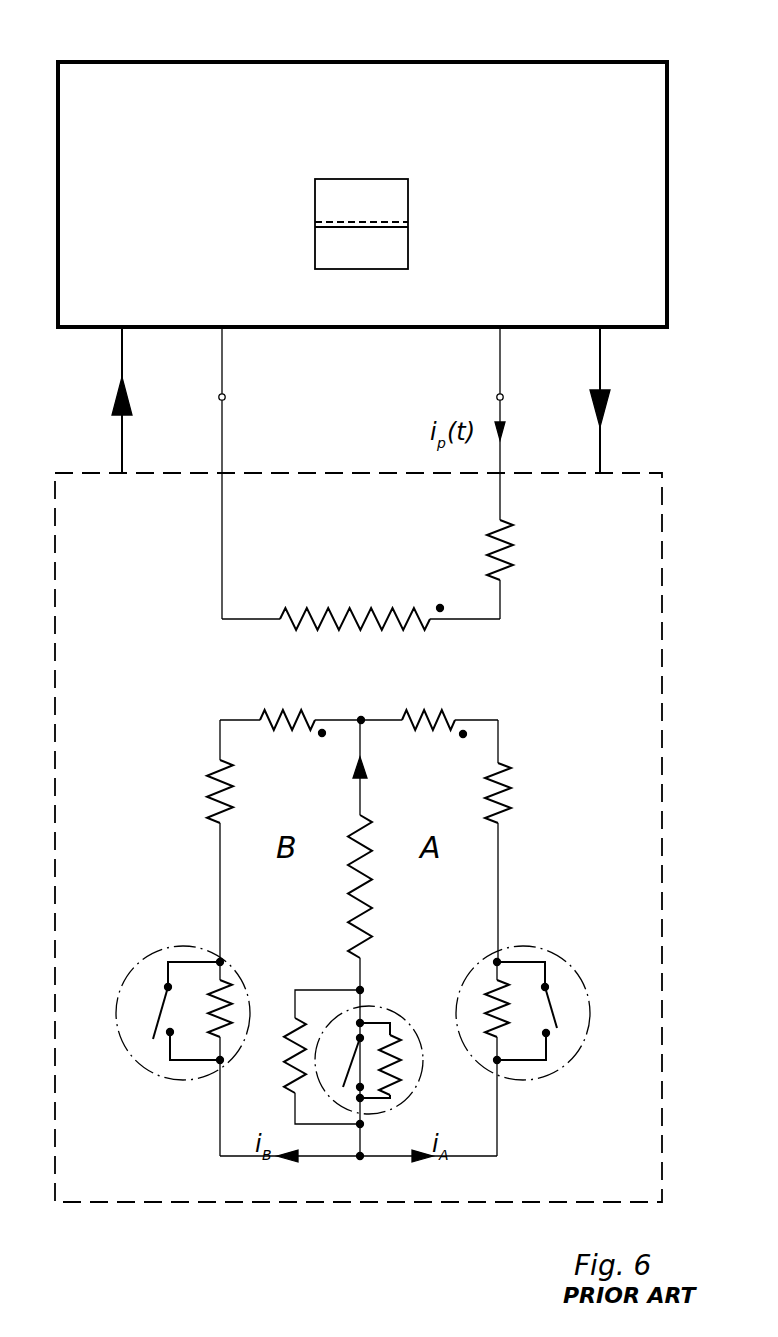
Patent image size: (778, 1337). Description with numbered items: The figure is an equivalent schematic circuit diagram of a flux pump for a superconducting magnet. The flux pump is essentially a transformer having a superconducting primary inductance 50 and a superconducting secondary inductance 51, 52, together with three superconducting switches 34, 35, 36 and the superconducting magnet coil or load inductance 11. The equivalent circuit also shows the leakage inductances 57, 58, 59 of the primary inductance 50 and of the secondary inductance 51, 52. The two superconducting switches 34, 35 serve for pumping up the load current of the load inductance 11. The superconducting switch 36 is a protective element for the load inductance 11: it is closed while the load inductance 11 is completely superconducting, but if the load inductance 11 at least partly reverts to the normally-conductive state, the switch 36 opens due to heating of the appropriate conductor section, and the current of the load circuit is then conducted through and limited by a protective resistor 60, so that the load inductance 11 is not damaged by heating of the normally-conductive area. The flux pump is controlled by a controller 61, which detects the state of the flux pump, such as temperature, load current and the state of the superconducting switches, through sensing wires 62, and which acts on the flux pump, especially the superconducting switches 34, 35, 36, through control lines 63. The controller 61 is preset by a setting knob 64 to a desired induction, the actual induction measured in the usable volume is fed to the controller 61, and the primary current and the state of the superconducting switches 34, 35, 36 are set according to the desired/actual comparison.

The controller 61 is at (645, 207).
The setting knob 64 is at (398, 204).
The sensing wires 62 is at (120, 445).
The control lines 63 is at (602, 438).
The superconducting primary inductance 50 is at (325, 612).
The leakage inductance 57 is at (508, 560).
The superconducting secondary inductance 51 is at (285, 712).
The superconducting secondary inductance 52 is at (437, 712).
The leakage inductance 58 is at (213, 790).
The leakage inductance 59 is at (510, 790).
The load inductance 11 is at (365, 910).
The superconducting switch 34 is at (152, 978).
The superconducting switch 35 is at (560, 978).
The superconducting switch 36 is at (400, 1038).
The protective resistor 60 is at (285, 1047).